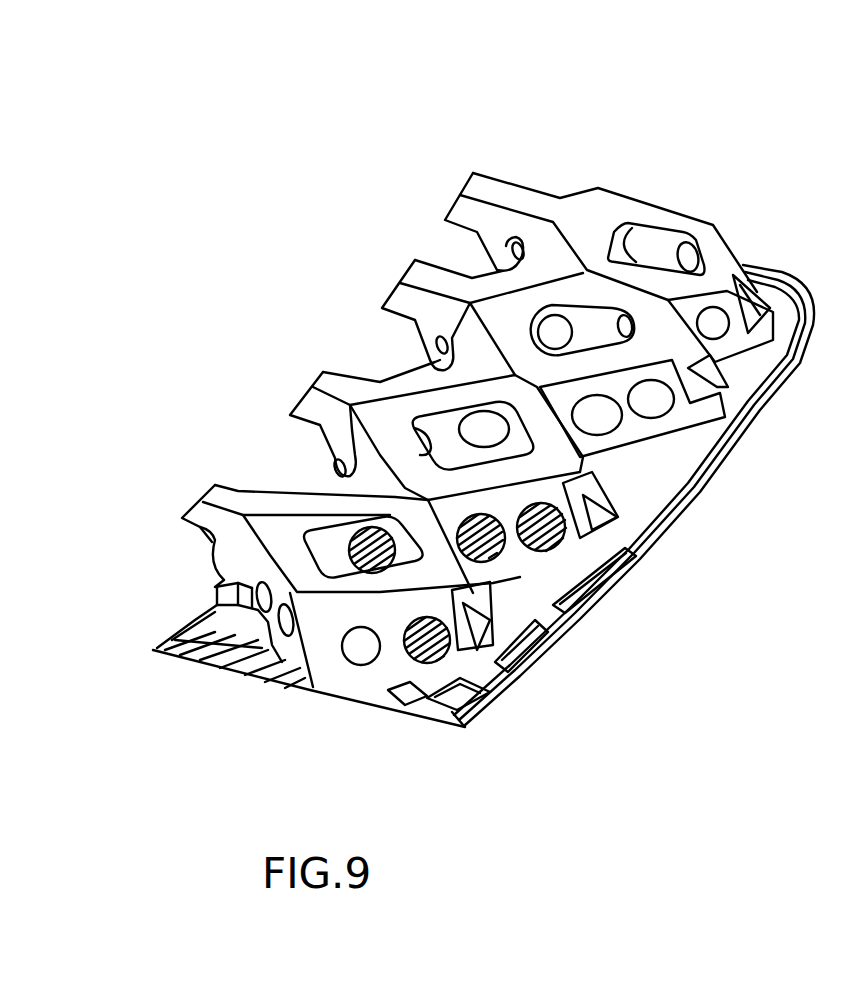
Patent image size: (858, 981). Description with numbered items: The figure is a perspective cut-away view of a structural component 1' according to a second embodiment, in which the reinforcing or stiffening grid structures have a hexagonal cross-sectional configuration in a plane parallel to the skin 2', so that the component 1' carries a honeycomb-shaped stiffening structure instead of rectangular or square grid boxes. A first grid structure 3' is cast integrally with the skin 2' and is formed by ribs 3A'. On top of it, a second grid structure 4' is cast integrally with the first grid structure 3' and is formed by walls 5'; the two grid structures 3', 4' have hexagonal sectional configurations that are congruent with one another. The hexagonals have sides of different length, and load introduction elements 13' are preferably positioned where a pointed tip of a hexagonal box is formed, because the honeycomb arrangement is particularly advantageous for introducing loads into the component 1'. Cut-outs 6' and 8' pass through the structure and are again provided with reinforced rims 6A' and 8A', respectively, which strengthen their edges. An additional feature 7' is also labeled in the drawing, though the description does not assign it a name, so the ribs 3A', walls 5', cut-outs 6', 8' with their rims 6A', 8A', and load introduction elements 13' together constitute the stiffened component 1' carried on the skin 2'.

The structural component 1' is at (477, 347).
The skin 2' is at (633, 495).
The first grid structure 3' is at (309, 727).
The ribs 3A' is at (235, 669).
The second grid structure 4' is at (137, 564).
The walls 5' is at (686, 434).
The cut-out 6' is at (346, 690).
The reinforced rim 6A' is at (512, 644).
The elongated slot 7' is at (683, 221).
The cut-out 8' is at (390, 487).
The reinforced rim 8A' is at (295, 507).
The load introduction elements 13' is at (710, 396).